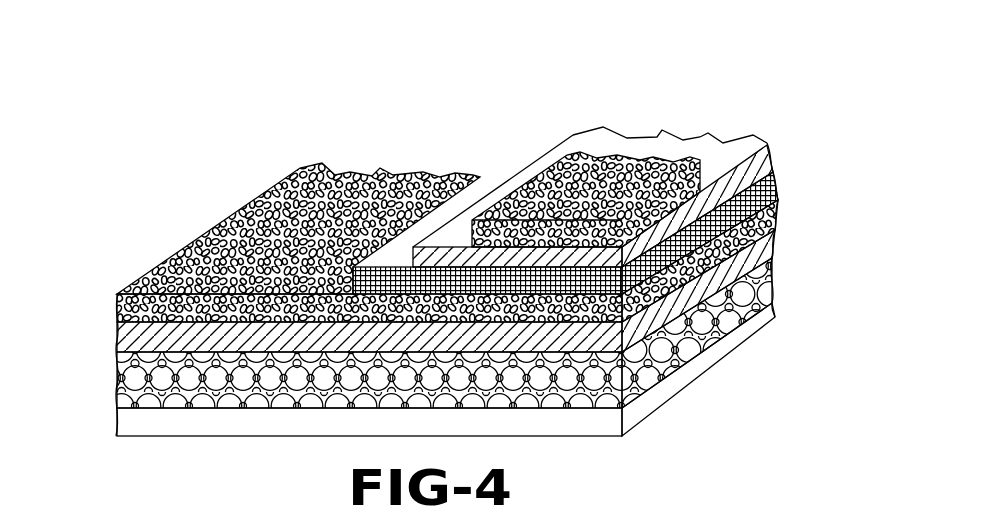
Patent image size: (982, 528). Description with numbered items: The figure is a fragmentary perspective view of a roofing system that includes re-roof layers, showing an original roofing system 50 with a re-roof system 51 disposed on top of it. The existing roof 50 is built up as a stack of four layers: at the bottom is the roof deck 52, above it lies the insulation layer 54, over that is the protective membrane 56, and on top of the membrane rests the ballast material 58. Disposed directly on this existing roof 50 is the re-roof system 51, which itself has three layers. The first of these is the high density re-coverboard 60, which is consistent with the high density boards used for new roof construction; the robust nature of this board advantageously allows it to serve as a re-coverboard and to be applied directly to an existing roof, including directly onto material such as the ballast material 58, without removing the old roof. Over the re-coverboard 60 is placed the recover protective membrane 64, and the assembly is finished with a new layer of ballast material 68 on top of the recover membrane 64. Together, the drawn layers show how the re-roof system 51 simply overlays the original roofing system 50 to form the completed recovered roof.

The original roofing system 50 is at (108, 435).
The re-roof system 51 is at (172, 222).
The roof deck 52 is at (702, 367).
The insulation layer 54 is at (753, 292).
The protective membrane 56 is at (753, 247).
The ballast material 58 is at (248, 225).
The high density re-coverboard 60 is at (495, 183).
The recover protective membrane 64 is at (590, 140).
The ballast material 68 is at (655, 168).